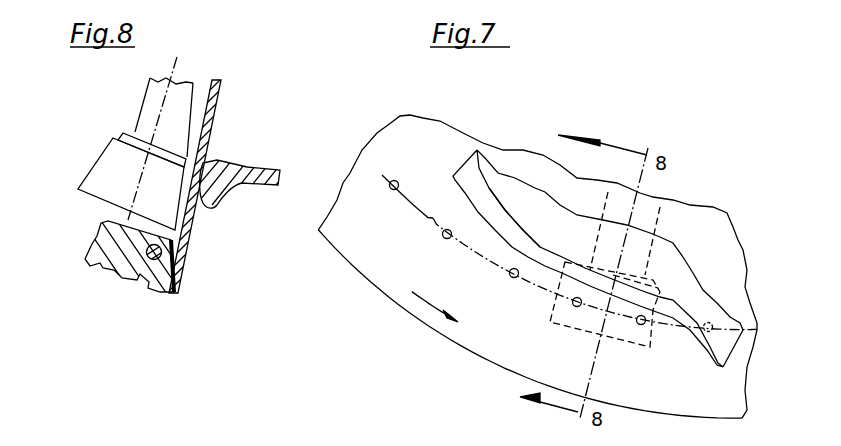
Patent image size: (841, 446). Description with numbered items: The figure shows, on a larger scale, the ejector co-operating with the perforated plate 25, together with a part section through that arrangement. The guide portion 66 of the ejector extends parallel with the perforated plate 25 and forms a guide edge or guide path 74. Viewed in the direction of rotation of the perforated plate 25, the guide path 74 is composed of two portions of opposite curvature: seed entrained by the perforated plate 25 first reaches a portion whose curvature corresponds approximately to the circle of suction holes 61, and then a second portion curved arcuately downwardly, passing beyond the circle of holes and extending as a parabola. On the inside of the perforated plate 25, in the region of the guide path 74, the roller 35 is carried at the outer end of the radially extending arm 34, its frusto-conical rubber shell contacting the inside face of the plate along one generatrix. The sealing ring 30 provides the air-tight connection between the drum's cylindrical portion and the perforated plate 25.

In FIG. 8, the perforated plate 25 is at (207, 138).
In FIG. 7, the perforated plate 25 is at (370, 257).
In FIG. 8, the sealing ring 30 is at (169, 258).
In FIG. 8, the arm 34 is at (178, 100).
In FIG. 8, the roller 35 is at (112, 162).
In FIG. 7, the roller 35 is at (548, 320).
In FIG. 7, the suction holes 61 is at (391, 188).
In FIG. 8, the guide portion 66 is at (227, 190).
In FIG. 7, the guide portion 66 is at (505, 198).
In FIG. 7, the guide path 74 is at (485, 226).